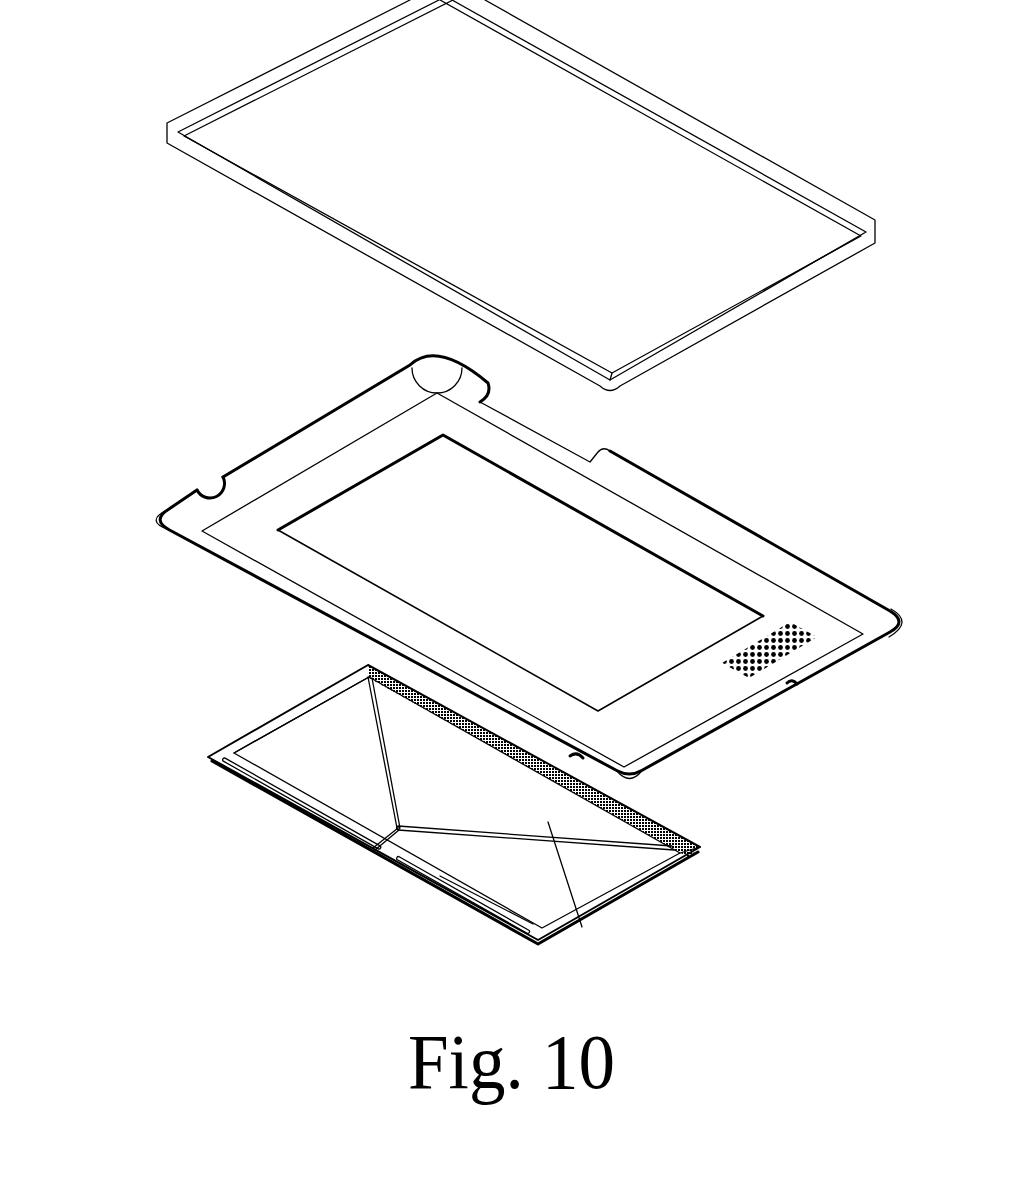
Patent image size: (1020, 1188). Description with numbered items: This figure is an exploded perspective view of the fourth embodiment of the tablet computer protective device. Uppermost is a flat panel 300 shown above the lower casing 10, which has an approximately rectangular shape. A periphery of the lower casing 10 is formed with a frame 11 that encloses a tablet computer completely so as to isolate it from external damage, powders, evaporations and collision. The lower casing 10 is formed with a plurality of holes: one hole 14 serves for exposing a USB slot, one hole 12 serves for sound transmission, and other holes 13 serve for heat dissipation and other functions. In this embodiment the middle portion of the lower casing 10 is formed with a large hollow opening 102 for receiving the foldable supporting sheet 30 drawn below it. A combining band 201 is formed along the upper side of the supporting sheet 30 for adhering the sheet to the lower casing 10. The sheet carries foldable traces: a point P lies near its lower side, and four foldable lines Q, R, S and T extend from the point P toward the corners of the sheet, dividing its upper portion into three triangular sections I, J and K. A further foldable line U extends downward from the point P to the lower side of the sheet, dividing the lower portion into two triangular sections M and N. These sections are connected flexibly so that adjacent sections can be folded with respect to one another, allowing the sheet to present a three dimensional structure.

The cover glass panel 300 is at (712, 168).
The lower casing 10 is at (642, 692).
The frame 11 is at (820, 577).
The hole for sound transmission 12 is at (793, 648).
The holes for heat dissipation 13 is at (572, 447).
The hole for exposing a USB slot 14 is at (213, 480).
The opening 102 is at (598, 547).
The bottom plate 30 is at (613, 907).
The combining band 201 is at (687, 832).
The foldable line Q is at (360, 670).
The triangular section K is at (317, 713).
The triangular section N is at (300, 788).
The foldable line S is at (307, 786).
The foldable line U is at (373, 850).
The point P is at (398, 828).
The triangular section M is at (468, 892).
The foldable line T is at (505, 897).
The triangular section J is at (568, 889).
The triangular section I is at (623, 867).
The foldable line R is at (690, 850).